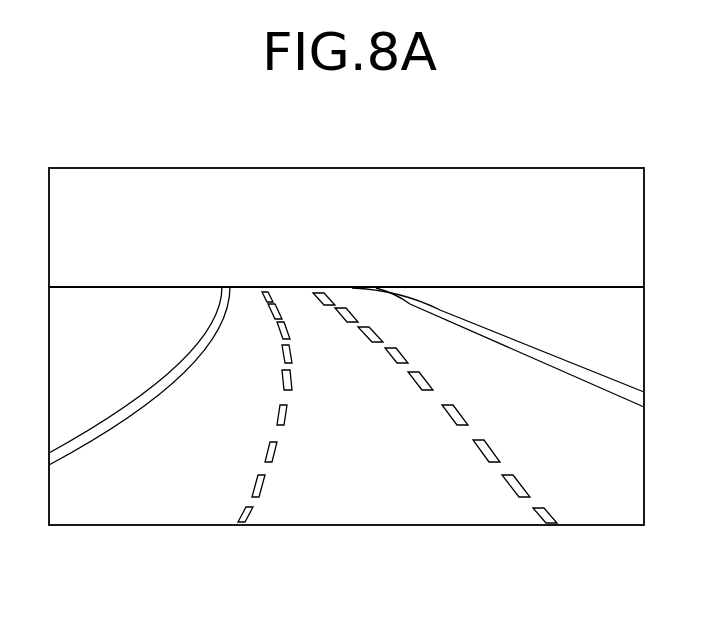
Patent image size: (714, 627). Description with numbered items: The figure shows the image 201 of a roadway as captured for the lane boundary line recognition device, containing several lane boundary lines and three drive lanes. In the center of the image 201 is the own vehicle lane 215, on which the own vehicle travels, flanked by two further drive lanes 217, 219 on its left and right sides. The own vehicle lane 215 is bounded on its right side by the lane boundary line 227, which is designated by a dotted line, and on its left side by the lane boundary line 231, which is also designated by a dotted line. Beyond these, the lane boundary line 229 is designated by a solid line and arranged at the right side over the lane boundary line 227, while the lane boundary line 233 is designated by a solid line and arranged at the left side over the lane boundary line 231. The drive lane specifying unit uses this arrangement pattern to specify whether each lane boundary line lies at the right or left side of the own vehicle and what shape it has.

The image 201 is at (495, 168).
The own vehicle lane 215 is at (367, 485).
The drive lane 217 is at (150, 483).
The drive lane 219 is at (597, 487).
The lane boundary line 227 is at (462, 412).
The lane boundary line 229 is at (537, 340).
The lane boundary line 231 is at (287, 412).
The lane boundary line 233 is at (193, 368).